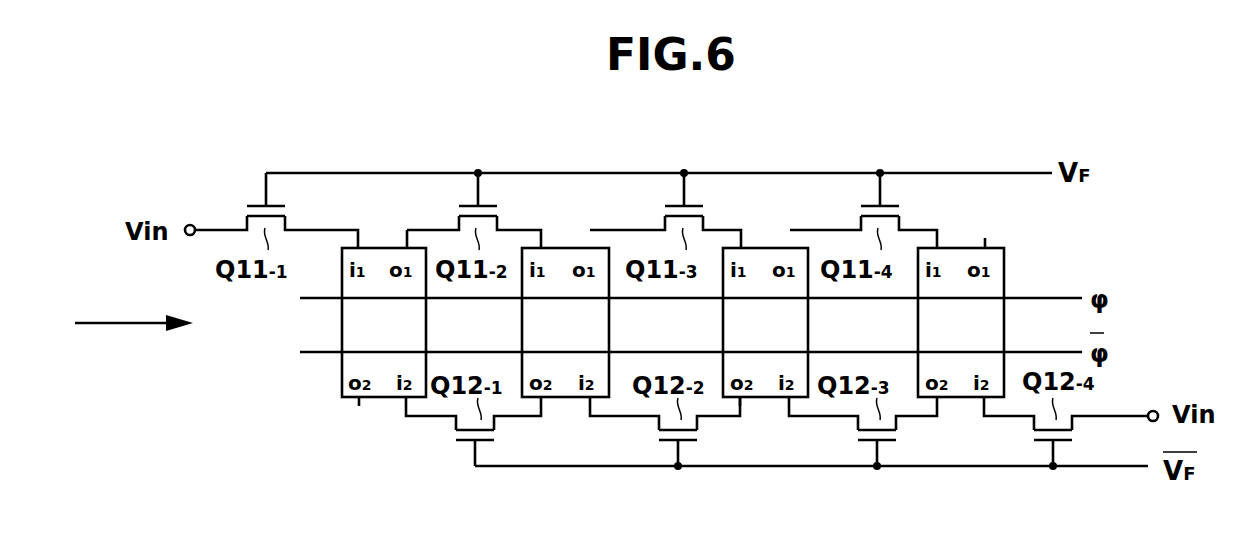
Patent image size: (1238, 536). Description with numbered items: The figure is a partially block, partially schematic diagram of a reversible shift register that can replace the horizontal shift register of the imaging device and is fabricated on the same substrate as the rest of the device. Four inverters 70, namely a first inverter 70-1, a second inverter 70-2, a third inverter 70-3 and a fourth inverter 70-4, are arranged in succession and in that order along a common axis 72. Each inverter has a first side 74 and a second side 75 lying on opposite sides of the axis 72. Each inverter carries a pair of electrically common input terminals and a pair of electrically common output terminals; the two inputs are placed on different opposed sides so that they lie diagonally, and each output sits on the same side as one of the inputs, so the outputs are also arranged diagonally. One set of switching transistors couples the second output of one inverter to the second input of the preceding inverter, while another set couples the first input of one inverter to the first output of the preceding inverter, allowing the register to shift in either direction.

The inverter 70 is at (627, 322).
The first inverter 70-1 is at (342, 327).
The second inverter 70-2 is at (522, 340).
The third inverter 70-3 is at (723, 330).
The fourth inverter 70-4 is at (918, 330).
The common axis 72 is at (134, 312).
The first side 74 is at (384, 248).
The second side 75 is at (372, 398).